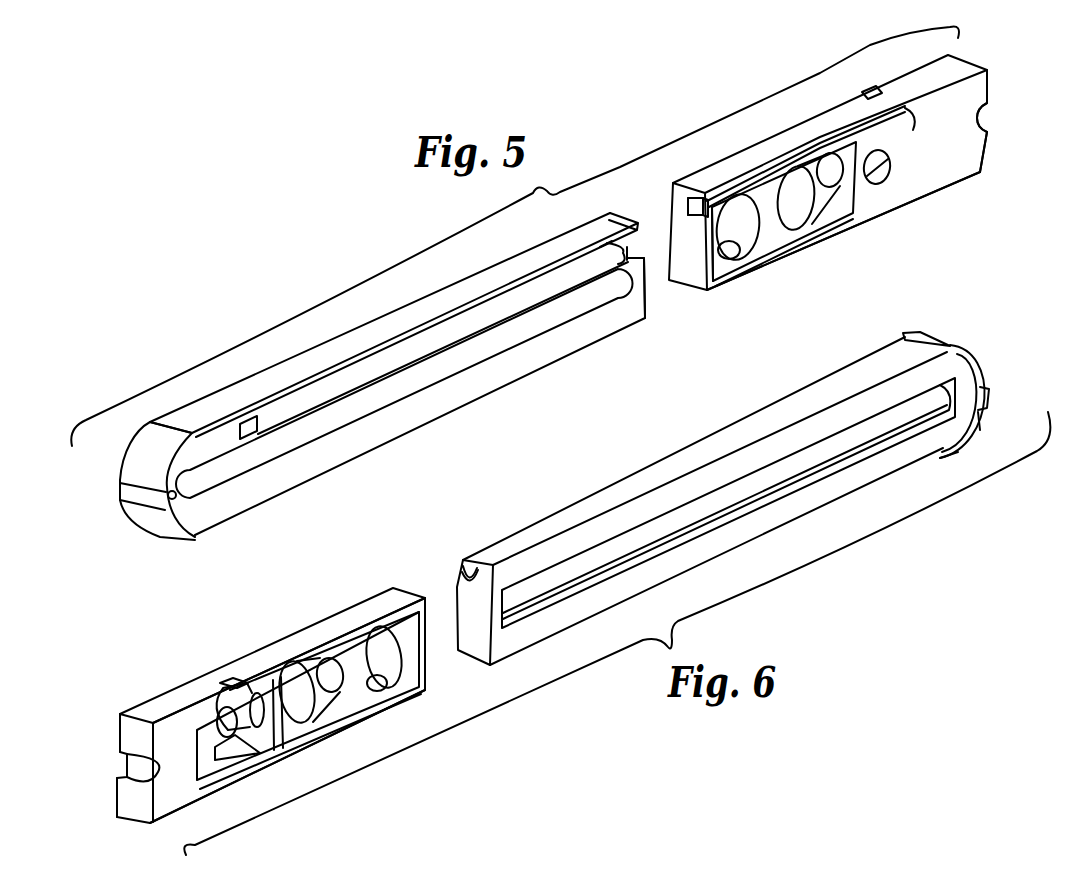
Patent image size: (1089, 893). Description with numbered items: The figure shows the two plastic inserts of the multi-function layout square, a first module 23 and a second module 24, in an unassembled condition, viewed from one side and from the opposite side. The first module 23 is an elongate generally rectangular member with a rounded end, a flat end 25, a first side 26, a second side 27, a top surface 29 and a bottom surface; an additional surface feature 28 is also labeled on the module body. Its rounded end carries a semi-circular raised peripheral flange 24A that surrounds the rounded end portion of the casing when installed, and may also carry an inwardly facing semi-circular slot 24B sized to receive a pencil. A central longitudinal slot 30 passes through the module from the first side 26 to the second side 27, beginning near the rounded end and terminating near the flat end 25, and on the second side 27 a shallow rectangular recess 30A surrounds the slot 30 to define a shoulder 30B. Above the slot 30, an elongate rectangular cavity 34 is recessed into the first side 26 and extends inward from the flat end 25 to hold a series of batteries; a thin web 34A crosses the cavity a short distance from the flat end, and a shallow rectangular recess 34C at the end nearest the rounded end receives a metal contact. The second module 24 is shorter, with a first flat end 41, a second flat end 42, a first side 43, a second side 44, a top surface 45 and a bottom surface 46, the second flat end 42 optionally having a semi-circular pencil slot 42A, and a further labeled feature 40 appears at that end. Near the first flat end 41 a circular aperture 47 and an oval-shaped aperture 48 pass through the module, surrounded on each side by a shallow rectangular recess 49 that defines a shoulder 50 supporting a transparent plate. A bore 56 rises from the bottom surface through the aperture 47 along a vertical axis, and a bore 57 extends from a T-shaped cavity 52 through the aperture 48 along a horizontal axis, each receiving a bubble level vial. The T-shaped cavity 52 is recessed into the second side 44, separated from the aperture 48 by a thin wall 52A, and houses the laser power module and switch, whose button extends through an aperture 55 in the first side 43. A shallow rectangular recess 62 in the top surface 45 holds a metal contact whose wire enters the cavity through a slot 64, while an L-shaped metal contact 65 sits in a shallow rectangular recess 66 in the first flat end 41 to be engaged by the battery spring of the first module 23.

In FIG. 5, the first module 23 is at (403, 379).
In FIG. 6, the first module 23 is at (683, 515).
In FIG. 5, the second module 24 is at (549, 299).
In FIG. 6, the second module 24 is at (551, 599).
In FIG. 5, the semi-circular raised peripheral flange 24A is at (200, 434).
In FIG. 6, the semi-circular raised peripheral flange 24A is at (981, 422).
In FIG. 5, the inwardly facing semi-circular slot 24B is at (126, 505).
In FIG. 6, the inwardly facing semi-circular slot 24B is at (986, 386).
In FIG. 5, the flat end 25 is at (645, 320).
In FIG. 6, the flat end 25 is at (474, 650).
In FIG. 5, the first side 26 is at (355, 443).
In FIG. 6, the second side 27 is at (798, 508).
In FIG. 5, the rail top 28 is at (331, 353).
In FIG. 6, the rail top 28 is at (684, 448).
In FIG. 6, the top surface 29 is at (697, 565).
In FIG. 5, the central longitudinal slot 30 is at (455, 362).
In FIG. 6, the central longitudinal slot 30 is at (731, 503).
In FIG. 6, the shallow rectangular recess 30A is at (874, 452).
In FIG. 6, the shoulder 30B is at (746, 512).
In FIG. 5, the elongate rectangular cavity 34 is at (415, 334).
In FIG. 5, the thin web 34A is at (602, 248).
In FIG. 6, the thin web 34A is at (466, 574).
In FIG. 5, the shallow rectangular recess 34C is at (258, 420).
In FIG. 6, the groove 40 is at (126, 766).
In FIG. 5, the first flat end 41 is at (828, 199).
In FIG. 6, the first flat end 41 is at (259, 718).
In FIG. 5, the second flat end 42 is at (988, 154).
In FIG. 6, the second flat end 42 is at (130, 800).
In FIG. 5, the inwardly facing semi-circular slot 42A is at (990, 112).
In FIG. 6, the inwardly facing semi-circular slot 42A is at (120, 754).
In FIG. 5, the first side 43 is at (900, 197).
In FIG. 6, the first side 43 is at (308, 696).
In FIG. 6, the second side 44 is at (215, 774).
In FIG. 5, the top surface 45 is at (923, 71).
In FIG. 6, the top surface 45 is at (272, 650).
In FIG. 5, the bottom surface 46 is at (879, 214).
In FIG. 6, the bottom surface 46 is at (176, 816).
In FIG. 5, the aperture 47 is at (745, 241).
In FIG. 6, the aperture 47 is at (386, 640).
In FIG. 5, the oval-shaped aperture 48 is at (808, 230).
In FIG. 6, the oval-shaped aperture 48 is at (329, 661).
In FIG. 5, the shallow rectangular recess 49 is at (727, 259).
In FIG. 6, the shallow rectangular recess 49 is at (290, 748).
In FIG. 5, the shoulder 50 is at (770, 248).
In FIG. 6, the shoulder 50 is at (350, 712).
In FIG. 6, the T-shaped cavity 52 is at (248, 768).
In FIG. 6, the thin wall 52A is at (265, 750).
In FIG. 5, the aperture 55 is at (890, 169).
In FIG. 5, the bore 56 is at (750, 253).
In FIG. 6, the bore 56 is at (392, 689).
In FIG. 5, the bore 57 is at (806, 170).
In FIG. 6, the bore 57 is at (300, 672).
In FIG. 5, the shallow rectangular recess 62 is at (863, 95).
In FIG. 6, the shallow rectangular recess 62 is at (228, 680).
In FIG. 6, the slot 64 is at (218, 702).
In FIG. 5, the L-shaped metal contact 65 is at (672, 189).
In FIG. 5, the shallow rectangular recess 66 is at (695, 206).